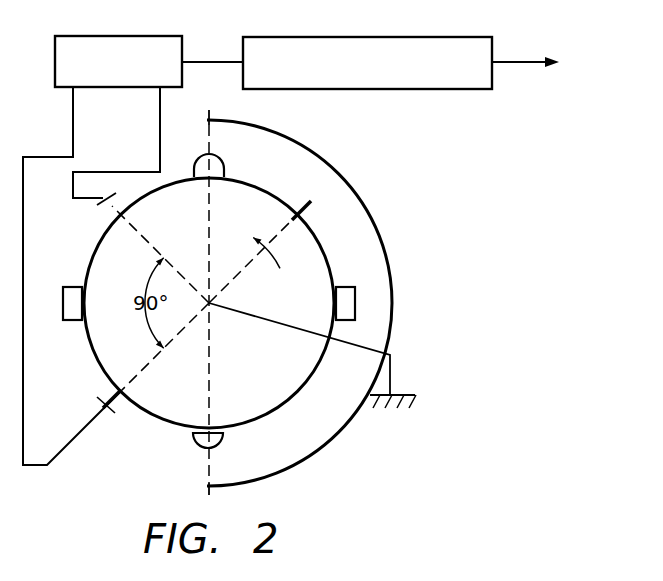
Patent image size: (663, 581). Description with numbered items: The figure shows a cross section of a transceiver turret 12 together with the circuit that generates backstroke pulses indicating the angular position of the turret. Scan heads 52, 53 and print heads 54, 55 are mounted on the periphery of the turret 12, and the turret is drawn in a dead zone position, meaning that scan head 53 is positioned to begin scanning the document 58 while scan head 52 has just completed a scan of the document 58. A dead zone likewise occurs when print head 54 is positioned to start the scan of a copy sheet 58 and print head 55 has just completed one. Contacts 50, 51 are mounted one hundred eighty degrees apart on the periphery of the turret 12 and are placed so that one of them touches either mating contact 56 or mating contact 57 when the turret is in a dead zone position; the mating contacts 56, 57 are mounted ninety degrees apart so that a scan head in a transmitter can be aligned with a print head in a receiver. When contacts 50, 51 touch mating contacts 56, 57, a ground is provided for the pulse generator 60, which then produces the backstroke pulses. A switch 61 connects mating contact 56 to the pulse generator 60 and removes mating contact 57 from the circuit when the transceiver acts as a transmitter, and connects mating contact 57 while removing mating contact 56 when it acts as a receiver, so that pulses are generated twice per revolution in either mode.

The turret 12 is at (90, 362).
The contact 50 is at (311, 209).
The contact 51 is at (118, 408).
The scan head 52 is at (224, 172).
The scan head 53 is at (223, 440).
The print head 54 is at (346, 287).
The print head 55 is at (72, 286).
The mating contact 56 is at (106, 415).
The mating contact 57 is at (105, 198).
The document 58 is at (382, 246).
The pulse generator 60 is at (386, 36).
The switch 61 is at (143, 36).